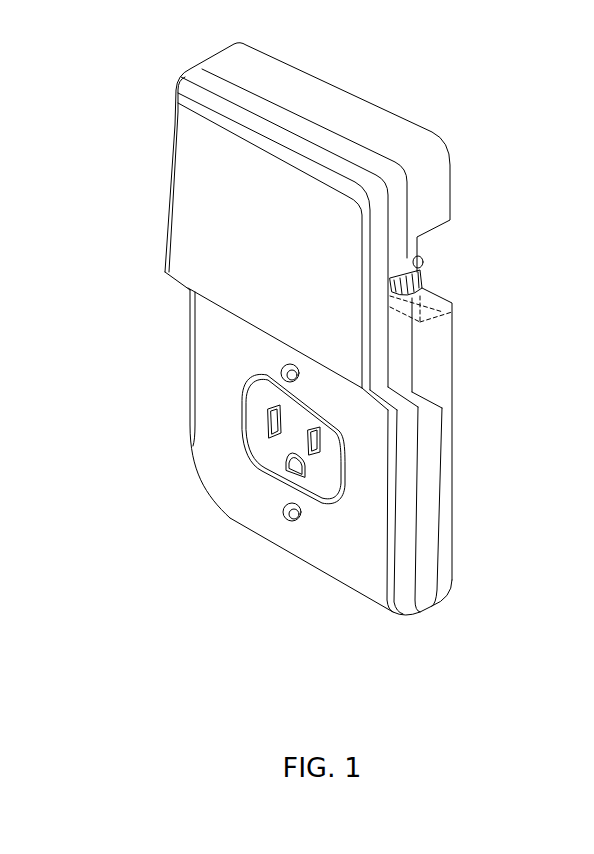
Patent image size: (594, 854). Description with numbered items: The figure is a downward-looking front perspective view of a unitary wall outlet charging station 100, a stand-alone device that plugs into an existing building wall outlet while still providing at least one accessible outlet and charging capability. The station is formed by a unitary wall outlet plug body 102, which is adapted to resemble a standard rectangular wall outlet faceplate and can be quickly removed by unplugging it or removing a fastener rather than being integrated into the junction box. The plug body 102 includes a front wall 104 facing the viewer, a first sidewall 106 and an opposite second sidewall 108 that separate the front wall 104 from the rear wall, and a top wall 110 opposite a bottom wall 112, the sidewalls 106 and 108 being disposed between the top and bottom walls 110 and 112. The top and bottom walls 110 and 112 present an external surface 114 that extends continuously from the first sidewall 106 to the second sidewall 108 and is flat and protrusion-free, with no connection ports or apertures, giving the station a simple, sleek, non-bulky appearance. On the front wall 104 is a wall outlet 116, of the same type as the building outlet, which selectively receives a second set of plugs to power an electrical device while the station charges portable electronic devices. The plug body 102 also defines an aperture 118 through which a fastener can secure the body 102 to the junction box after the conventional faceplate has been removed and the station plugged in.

The unitary wall outlet charging station 100 is at (288, 738).
The unitary wall outlet plug body 102 is at (183, 126).
The front wall 104 is at (183, 243).
The first sidewall 106 is at (422, 353).
The second sidewall 108 is at (193, 430).
The top wall 110 is at (313, 93).
The bottom wall 112 is at (318, 573).
The external surface 114 is at (378, 137).
The wall outlet 116 is at (320, 467).
The aperture 118 is at (282, 373).